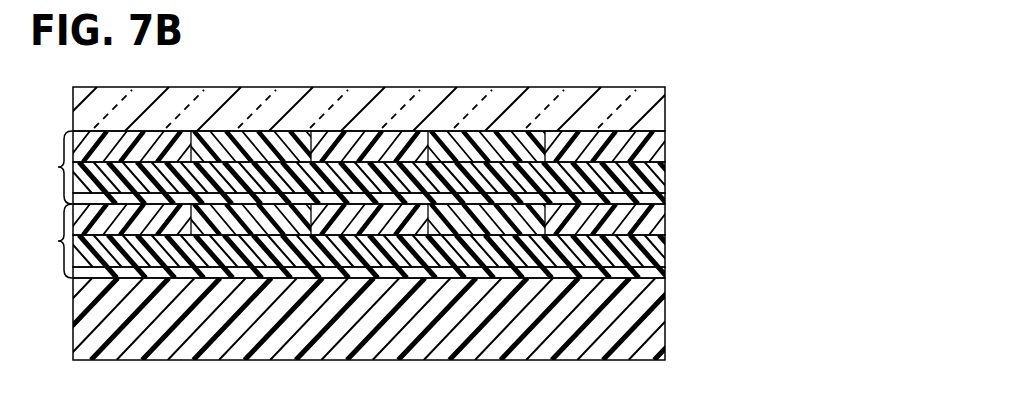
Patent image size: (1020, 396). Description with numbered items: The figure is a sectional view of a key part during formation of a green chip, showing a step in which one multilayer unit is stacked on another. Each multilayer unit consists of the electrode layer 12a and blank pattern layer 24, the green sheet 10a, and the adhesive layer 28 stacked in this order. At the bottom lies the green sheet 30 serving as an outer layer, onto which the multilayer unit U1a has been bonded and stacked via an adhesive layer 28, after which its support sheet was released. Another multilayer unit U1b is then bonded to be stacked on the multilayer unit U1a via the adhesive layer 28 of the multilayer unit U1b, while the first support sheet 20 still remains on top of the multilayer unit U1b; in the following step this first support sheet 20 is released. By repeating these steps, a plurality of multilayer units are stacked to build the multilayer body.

The first support sheet 20 is at (651, 117).
The blank pattern layer 24 is at (379, 145).
The electrode layer 12a is at (257, 143).
The green sheet 10a is at (651, 176).
The adhesive layer 28 is at (651, 201).
The green sheet 30 is at (651, 320).
The multilayer unit U1b is at (42, 167).
The multilayer unit U1a is at (42, 241).